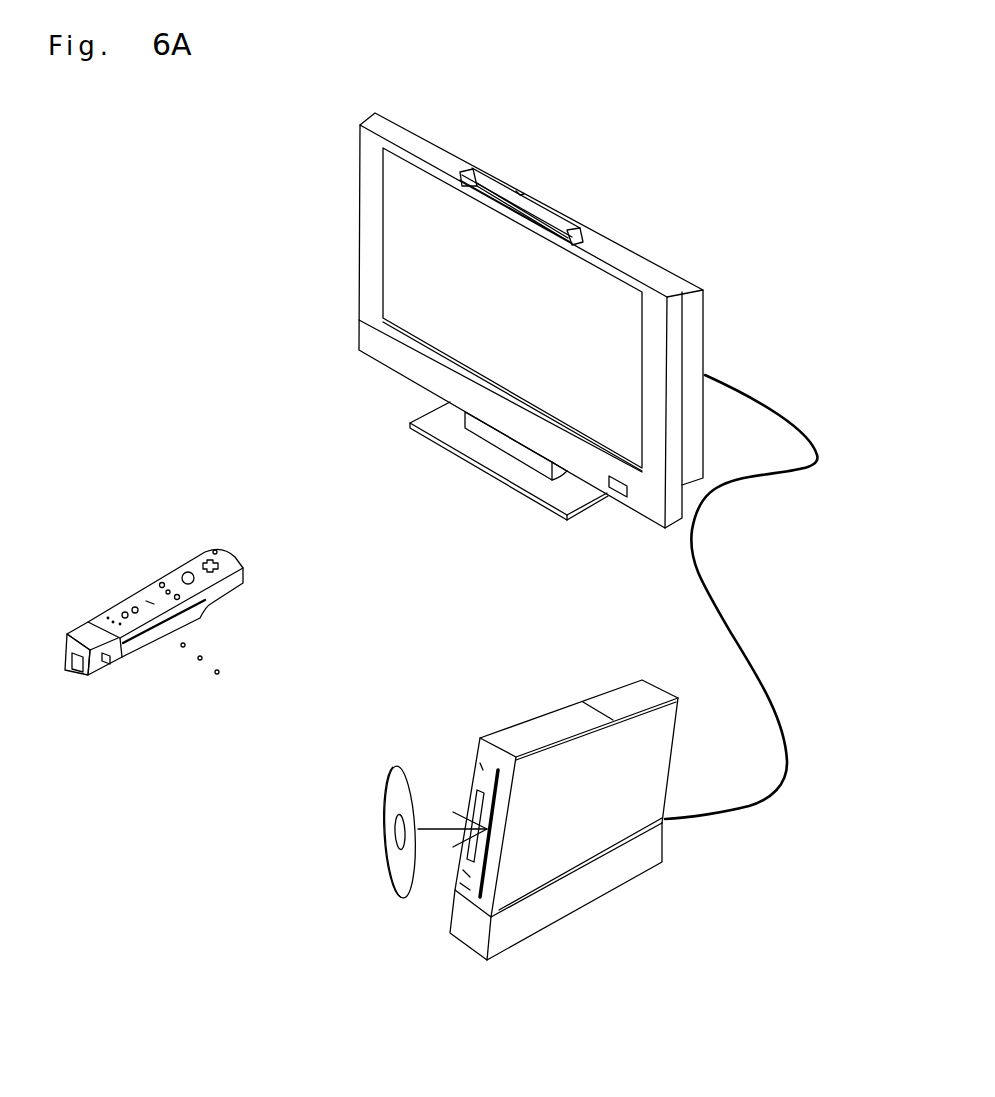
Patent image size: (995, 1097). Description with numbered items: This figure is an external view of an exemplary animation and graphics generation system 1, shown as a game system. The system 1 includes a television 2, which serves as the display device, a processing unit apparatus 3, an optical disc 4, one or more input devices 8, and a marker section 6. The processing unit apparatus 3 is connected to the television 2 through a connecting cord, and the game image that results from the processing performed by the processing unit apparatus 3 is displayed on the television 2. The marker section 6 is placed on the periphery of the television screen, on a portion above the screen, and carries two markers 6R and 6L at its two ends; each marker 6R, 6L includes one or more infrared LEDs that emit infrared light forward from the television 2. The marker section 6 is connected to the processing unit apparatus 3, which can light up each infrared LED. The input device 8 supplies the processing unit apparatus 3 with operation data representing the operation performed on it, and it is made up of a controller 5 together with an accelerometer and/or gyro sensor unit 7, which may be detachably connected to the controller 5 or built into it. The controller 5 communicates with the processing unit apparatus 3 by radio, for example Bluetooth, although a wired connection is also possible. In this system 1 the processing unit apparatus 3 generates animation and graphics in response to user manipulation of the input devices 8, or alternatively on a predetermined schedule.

The animation and graphics generation system 1 is at (432, 536).
The television 2 is at (660, 268).
The processing unit apparatus 3 is at (562, 731).
The optical disc 4 is at (393, 787).
The controller 5 is at (188, 562).
The marker section 6 is at (518, 193).
The marker 6L is at (472, 175).
The marker 6R is at (573, 228).
The sensor unit 7 is at (73, 630).
The input device 8 is at (123, 562).